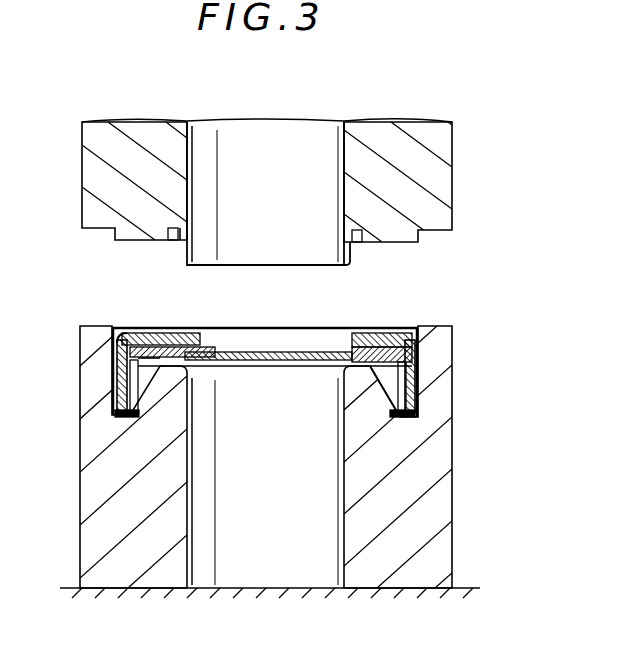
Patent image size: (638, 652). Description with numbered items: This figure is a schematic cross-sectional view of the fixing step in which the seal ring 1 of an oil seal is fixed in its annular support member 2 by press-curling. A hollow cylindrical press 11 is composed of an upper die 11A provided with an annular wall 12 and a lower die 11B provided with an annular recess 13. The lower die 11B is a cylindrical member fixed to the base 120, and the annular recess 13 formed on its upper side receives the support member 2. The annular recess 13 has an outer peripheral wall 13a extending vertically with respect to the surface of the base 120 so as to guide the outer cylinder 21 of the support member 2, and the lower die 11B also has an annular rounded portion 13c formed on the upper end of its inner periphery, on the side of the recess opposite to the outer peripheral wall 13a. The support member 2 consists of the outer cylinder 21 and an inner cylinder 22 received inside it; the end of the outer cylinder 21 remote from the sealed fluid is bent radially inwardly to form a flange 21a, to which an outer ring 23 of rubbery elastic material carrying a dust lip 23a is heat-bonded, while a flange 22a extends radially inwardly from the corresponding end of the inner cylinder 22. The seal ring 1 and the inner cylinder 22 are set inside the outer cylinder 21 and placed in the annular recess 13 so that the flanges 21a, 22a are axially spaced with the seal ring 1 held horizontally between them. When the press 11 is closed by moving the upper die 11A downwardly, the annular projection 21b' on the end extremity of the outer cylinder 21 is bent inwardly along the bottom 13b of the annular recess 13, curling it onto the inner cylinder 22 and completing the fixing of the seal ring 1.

The seal ring 1 is at (226, 344).
The annular support member 2 is at (395, 327).
The hollow cylindrical press 11 is at (554, 208).
The upper die 11A is at (443, 218).
The lower die 11B is at (440, 485).
The annular wall 12 is at (352, 250).
The annular recess 13 is at (412, 385).
The outer peripheral wall 13a is at (415, 347).
The bottom of the annular recess 13b is at (412, 402).
The annular rounded portion 13c is at (355, 368).
The outer cylinder 21 is at (113, 363).
The flange 21a is at (158, 333).
The annular projection 21b' is at (82, 427).
The inner cylinder 22 is at (113, 383).
The flange 22a is at (148, 375).
The outer ring 23 is at (137, 333).
The dust lip 23a is at (190, 333).
The base 120 is at (280, 590).